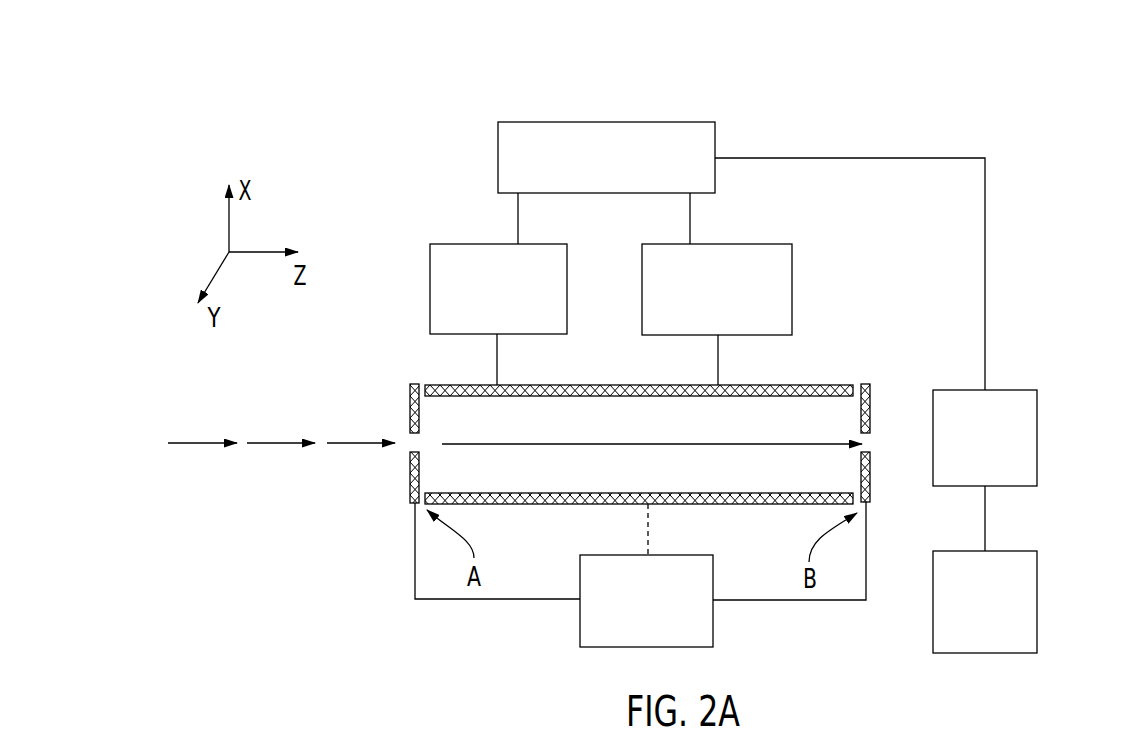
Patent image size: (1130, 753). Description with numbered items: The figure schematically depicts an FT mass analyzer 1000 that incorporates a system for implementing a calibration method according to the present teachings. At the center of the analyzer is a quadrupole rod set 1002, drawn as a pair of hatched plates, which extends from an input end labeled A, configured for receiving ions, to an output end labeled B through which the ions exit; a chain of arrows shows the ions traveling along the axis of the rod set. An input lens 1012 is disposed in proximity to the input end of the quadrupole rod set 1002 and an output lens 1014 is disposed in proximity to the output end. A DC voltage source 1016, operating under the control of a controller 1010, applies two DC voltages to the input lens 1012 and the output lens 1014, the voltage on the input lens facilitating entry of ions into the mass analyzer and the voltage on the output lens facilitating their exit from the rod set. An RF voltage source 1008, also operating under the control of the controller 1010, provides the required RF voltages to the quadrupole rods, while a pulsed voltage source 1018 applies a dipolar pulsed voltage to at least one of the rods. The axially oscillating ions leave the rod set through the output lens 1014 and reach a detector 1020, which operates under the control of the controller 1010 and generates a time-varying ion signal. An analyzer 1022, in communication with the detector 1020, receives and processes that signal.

The FT mass analyzer 1000 is at (267, 135).
The quadrupole rod set 1002 is at (815, 385).
The RF voltage source 1008 is at (430, 292).
The controller 1010 is at (498, 142).
The input lens 1012 is at (410, 480).
The output lens 1014 is at (872, 496).
The DC voltage source 1016 is at (580, 625).
The pulsed voltage source 1018 is at (792, 290).
The detector 1020 is at (1037, 442).
The analyzer 1022 is at (1037, 604).